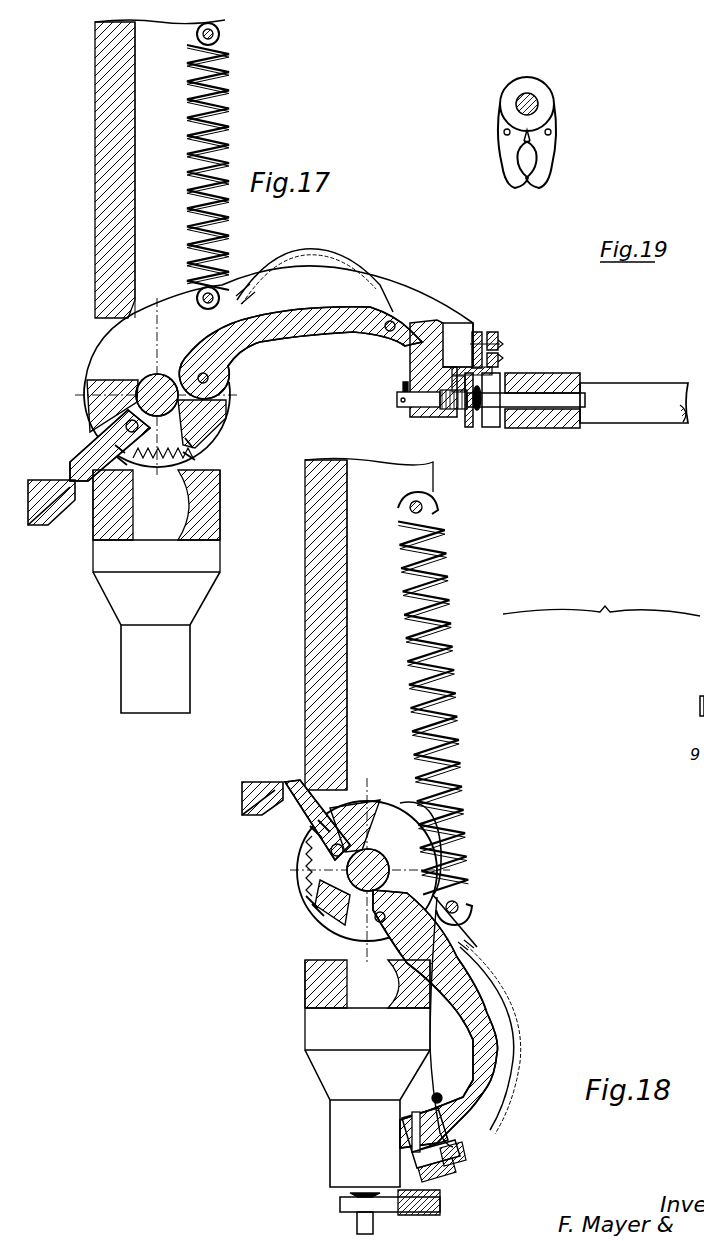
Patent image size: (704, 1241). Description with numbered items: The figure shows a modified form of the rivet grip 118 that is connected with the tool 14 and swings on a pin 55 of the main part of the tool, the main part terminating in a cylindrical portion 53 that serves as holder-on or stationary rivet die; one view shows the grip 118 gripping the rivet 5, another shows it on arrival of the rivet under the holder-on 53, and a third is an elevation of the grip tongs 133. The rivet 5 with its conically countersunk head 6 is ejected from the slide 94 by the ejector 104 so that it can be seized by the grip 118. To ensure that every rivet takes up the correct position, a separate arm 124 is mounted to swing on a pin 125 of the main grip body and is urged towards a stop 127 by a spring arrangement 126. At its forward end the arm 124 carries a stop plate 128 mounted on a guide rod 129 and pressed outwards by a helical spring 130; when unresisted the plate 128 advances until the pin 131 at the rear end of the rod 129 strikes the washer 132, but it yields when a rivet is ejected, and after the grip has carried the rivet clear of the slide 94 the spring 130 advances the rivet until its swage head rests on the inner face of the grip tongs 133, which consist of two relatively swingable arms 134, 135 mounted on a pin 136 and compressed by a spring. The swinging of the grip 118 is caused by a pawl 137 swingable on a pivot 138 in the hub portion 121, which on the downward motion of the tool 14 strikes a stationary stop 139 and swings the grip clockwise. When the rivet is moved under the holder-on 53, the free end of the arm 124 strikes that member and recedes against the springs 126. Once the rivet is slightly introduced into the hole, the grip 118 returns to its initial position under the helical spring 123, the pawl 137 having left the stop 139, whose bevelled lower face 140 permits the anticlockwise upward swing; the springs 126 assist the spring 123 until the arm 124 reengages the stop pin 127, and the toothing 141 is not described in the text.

In FIG. 17, the countersunk rivet 5 is at (490, 398).
In FIG. 18, the countersunk rivet 5 is at (356, 1218).
In FIG. 17, the conically countersunk head 6 is at (478, 412).
In FIG. 17, the tool 14 is at (92, 198).
In FIG. 18, the tool 14 is at (300, 568).
In FIG. 17, the cylindrical portion 53 is at (190, 654).
In FIG. 18, the cylindrical portion 53 is at (337, 1157).
In FIG. 17, the pin 55 is at (151, 375).
In FIG. 18, the pin 55 is at (380, 858).
In FIG. 17, the slide 94 is at (562, 375).
In FIG. 17, the ejector 104 is at (600, 398).
In FIG. 18, the ejector 104 is at (700, 703).
In FIG. 17, the rivet grip 118 is at (408, 298).
In FIG. 18, the rivet grip 118 is at (465, 935).
In FIG. 17, the hub portion 121 is at (100, 367).
In FIG. 18, the hub portion 121 is at (370, 870).
In FIG. 17, the helical spring 123 is at (222, 150).
In FIG. 18, the helical spring 123 is at (452, 667).
In FIG. 17, the arm 124 is at (312, 323).
In FIG. 18, the arm 124 is at (462, 995).
In FIG. 17, the pin 125 is at (212, 380).
In FIG. 18, the pin 125 is at (322, 933).
In FIG. 17, the spring arrangement 126 is at (358, 258).
In FIG. 18, the spring arrangement 126 is at (518, 1050).
In FIG. 17, the stop 127 is at (388, 332).
In FIG. 18, the stop 127 is at (450, 1088).
In FIG. 17, the stop plate 128 is at (470, 428).
In FIG. 18, the stop plate 128 is at (450, 1172).
In FIG. 17, the guide rod 129 is at (414, 418).
In FIG. 18, the guide rod 129 is at (404, 1136).
In FIG. 17, the helical spring 130 is at (458, 418).
In FIG. 18, the helical spring 130 is at (466, 1158).
In FIG. 17, the pin 131 is at (396, 402).
In FIG. 17, the washer 132 is at (403, 385).
In FIG. 17, the grip tongs 133 is at (496, 428).
In FIG. 18, the grip tongs 133 is at (340, 1204).
In FIG. 19, the swingable arm 134 is at (500, 158).
In FIG. 19, the swingable arm 135 is at (555, 158).
In FIG. 17, the pin 136 is at (500, 338).
In FIG. 19, the pin 136 is at (540, 108).
In FIG. 17, the pawl 137 is at (80, 448).
In FIG. 18, the pawl 137 is at (300, 810).
In FIG. 17, the pivot 138 is at (110, 410).
In FIG. 18, the pivot 138 is at (302, 857).
In FIG. 17, the stationary stop 139 is at (60, 480).
In FIG. 18, the stationary stop 139 is at (255, 781).
In FIG. 17, the bevelled lower face 140 is at (60, 518).
In FIG. 18, the bevelled lower face 140 is at (255, 822).
In FIG. 17, the toothing 141 is at (195, 462).
In FIG. 18, the toothing 141 is at (300, 888).